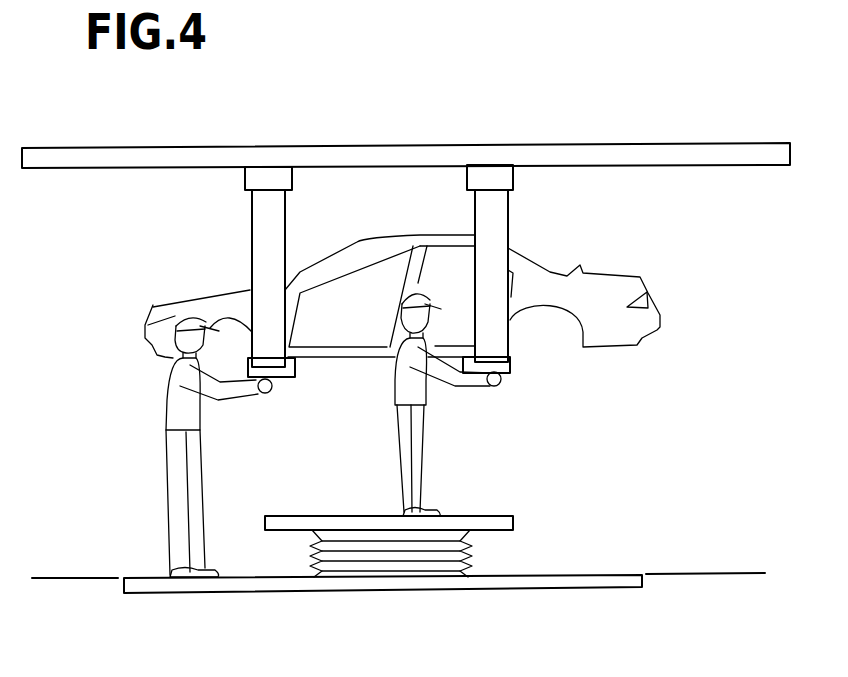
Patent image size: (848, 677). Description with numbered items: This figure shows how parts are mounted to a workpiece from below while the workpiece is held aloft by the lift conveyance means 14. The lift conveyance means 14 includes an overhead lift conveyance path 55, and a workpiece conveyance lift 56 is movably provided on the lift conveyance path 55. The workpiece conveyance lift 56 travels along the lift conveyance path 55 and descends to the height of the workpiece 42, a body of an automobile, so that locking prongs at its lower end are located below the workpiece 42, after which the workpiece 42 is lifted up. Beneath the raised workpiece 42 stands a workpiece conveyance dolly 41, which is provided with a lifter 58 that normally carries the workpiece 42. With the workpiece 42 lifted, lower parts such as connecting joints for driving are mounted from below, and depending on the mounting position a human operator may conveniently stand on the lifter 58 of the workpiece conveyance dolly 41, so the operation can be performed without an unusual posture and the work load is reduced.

The lift conveyance means 14 is at (406, 216).
The lift conveyance path 55 is at (413, 157).
The workpiece conveyance lift 56 is at (495, 213).
The workpiece 42 is at (550, 282).
The lifter 58 is at (388, 557).
The workpiece conveyance dolly 41 is at (563, 575).